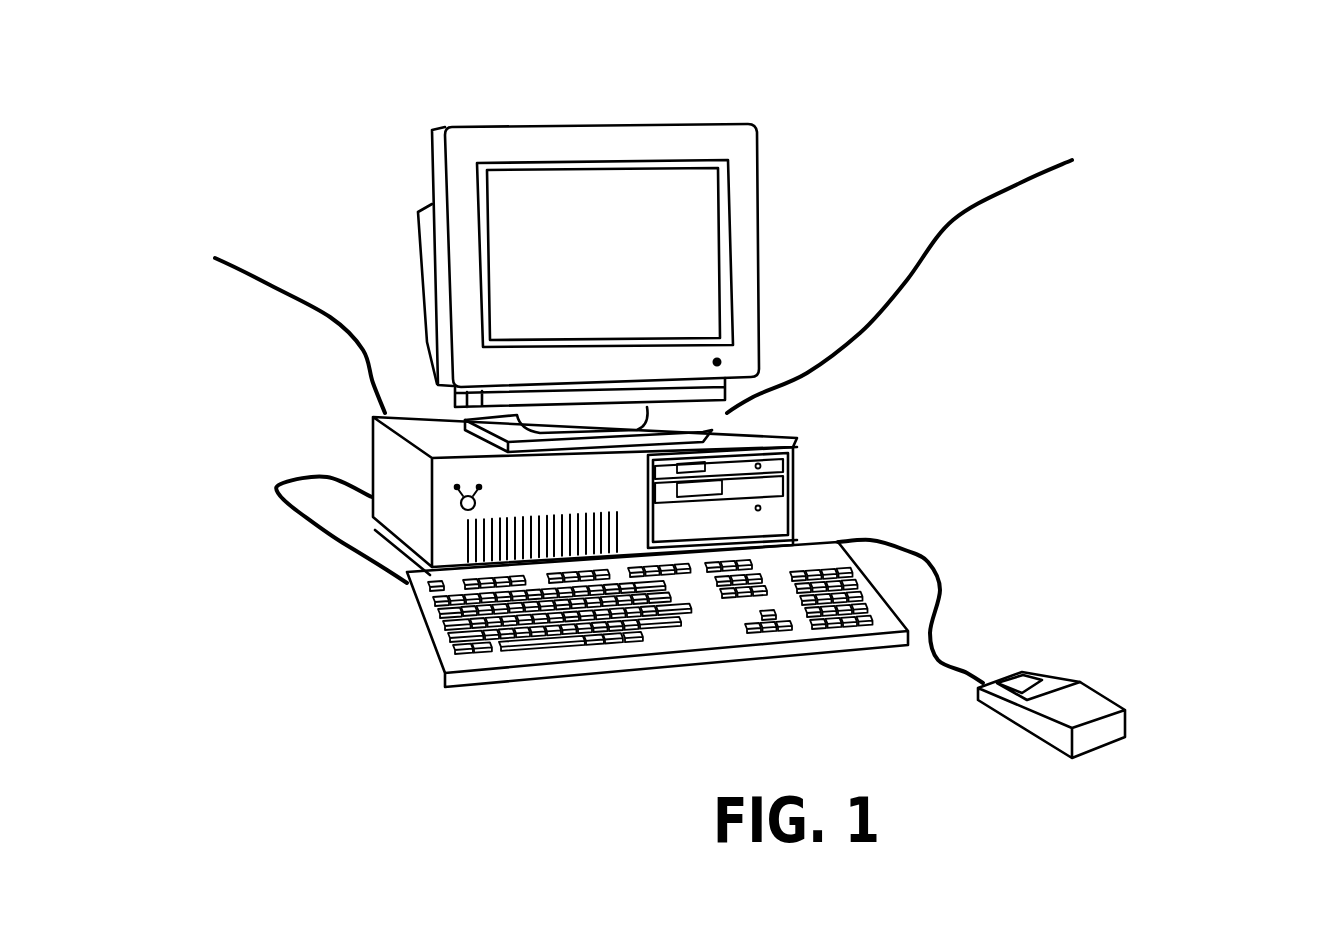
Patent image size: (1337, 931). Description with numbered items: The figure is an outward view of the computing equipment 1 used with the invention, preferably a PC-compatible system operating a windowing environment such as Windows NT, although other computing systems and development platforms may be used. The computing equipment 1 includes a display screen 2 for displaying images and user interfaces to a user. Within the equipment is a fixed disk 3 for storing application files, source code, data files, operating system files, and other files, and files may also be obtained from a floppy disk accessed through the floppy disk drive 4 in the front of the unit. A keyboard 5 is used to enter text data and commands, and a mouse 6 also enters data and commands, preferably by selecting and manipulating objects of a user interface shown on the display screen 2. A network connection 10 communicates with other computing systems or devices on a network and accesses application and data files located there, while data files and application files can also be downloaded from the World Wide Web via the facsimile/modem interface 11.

The computing equipment 1 is at (869, 212).
The display screen 2 is at (633, 123).
The fixed disk 3 is at (778, 510).
The floppy disk drive 4 is at (782, 472).
The keyboard 5 is at (520, 655).
The mouse 6 is at (1088, 750).
The network connection 10 is at (1027, 177).
The facsimile/modem interface 11 is at (333, 315).